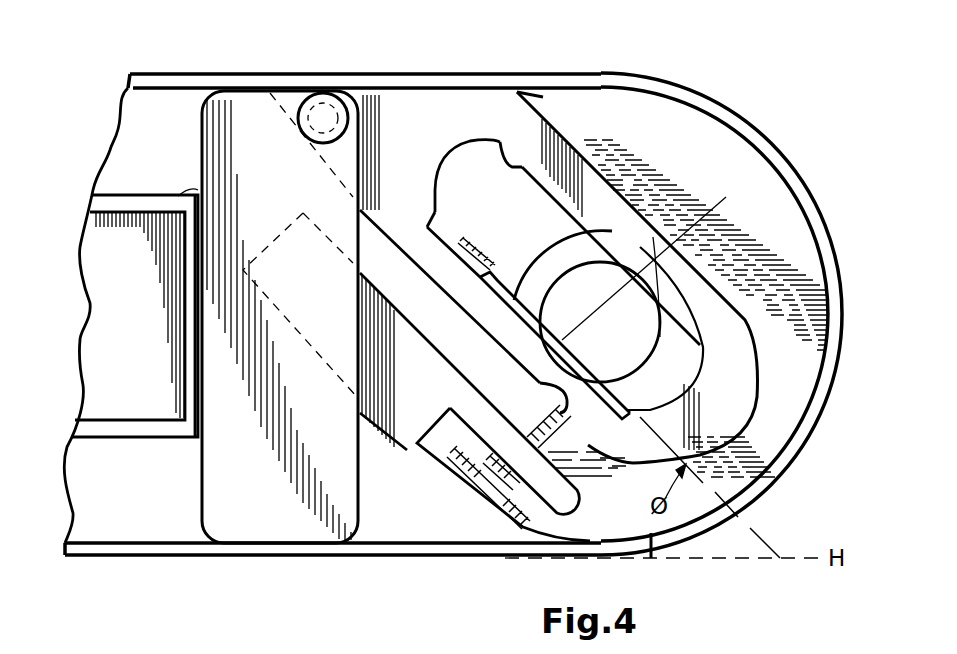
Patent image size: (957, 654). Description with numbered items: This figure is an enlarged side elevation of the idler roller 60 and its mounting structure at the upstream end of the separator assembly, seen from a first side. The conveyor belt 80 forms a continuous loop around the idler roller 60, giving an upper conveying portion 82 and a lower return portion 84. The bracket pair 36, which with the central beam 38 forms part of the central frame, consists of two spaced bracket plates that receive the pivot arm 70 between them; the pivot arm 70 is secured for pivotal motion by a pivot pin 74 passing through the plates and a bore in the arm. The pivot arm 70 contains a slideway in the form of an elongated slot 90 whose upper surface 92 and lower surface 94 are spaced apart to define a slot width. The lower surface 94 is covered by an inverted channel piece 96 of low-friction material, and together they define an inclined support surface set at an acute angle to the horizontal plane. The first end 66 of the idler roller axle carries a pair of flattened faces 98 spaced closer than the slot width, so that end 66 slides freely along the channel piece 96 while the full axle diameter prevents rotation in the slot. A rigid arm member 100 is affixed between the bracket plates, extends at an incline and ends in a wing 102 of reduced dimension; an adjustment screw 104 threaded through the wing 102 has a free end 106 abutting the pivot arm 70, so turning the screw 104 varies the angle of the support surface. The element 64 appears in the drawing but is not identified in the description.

The bracket pair 36 is at (235, 537).
The central beam 38 is at (178, 195).
The idler roller 60 is at (657, 110).
The cylinder 64 is at (563, 243).
The first end 66 is at (600, 322).
The pivot arm 70 is at (400, 100).
The pivot pin 74 is at (318, 100).
The conveyor belt 80 is at (763, 130).
The upper conveying portion 82 is at (183, 73).
The lower return portion 84 is at (160, 556).
The elongated slot 90 is at (476, 158).
The upper surface 92 is at (503, 143).
The lower surface 94 is at (475, 248).
The inverted channel piece 96 is at (520, 318).
The flattened faces 98 is at (660, 263).
The rigid arm member 100 is at (407, 443).
The wing 102 is at (567, 497).
The adjustment screw 104 is at (507, 517).
The free end 106 is at (552, 384).